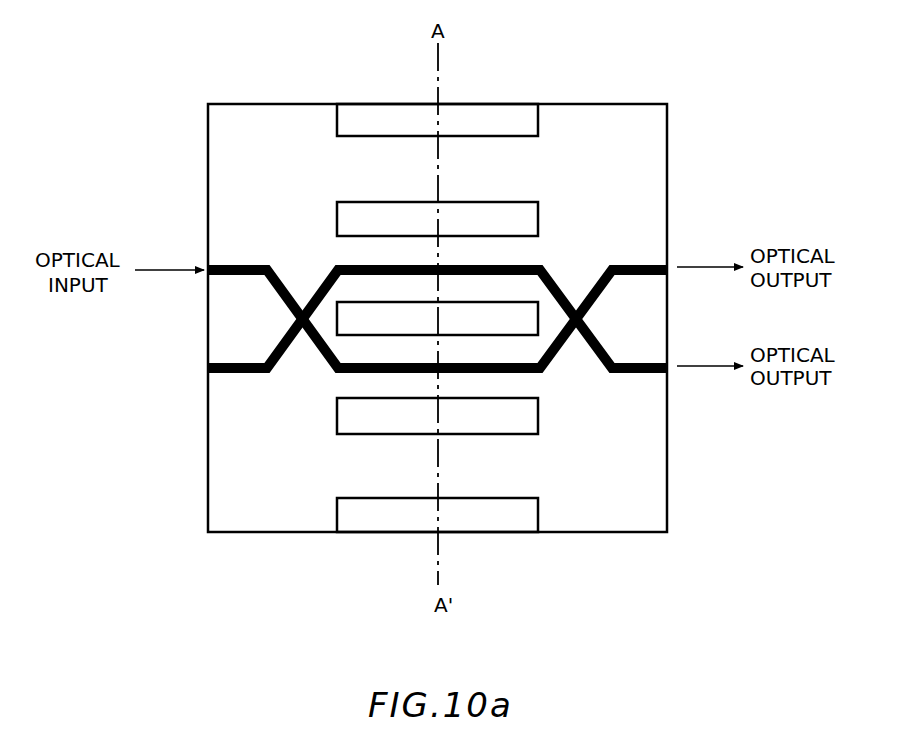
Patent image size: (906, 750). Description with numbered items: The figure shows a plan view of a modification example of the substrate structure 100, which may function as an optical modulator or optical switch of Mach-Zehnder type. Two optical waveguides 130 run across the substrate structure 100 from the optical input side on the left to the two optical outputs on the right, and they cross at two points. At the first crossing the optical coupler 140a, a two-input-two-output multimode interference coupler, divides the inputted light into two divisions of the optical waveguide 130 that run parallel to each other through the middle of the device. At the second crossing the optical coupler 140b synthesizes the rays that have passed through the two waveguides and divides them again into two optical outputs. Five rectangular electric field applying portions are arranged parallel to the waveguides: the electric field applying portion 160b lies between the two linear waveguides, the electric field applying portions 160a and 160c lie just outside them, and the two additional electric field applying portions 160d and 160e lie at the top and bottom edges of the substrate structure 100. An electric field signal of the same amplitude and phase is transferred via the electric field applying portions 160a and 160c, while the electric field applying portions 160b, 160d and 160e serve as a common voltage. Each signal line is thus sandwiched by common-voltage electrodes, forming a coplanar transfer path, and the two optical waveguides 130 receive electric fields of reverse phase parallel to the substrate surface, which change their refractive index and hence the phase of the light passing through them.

The substrate structure 100 is at (612, 104).
The optical waveguide 130 is at (238, 383).
The optical coupler 140a is at (302, 339).
The optical coupler 140b is at (577, 339).
The electric field applying portion 160a is at (538, 216).
The electric field applying portion 160b is at (358, 302).
The electric field applying portion 160c is at (492, 434).
The electric field applying portion 160d is at (538, 117).
The electric field applying portion 160e is at (538, 512).